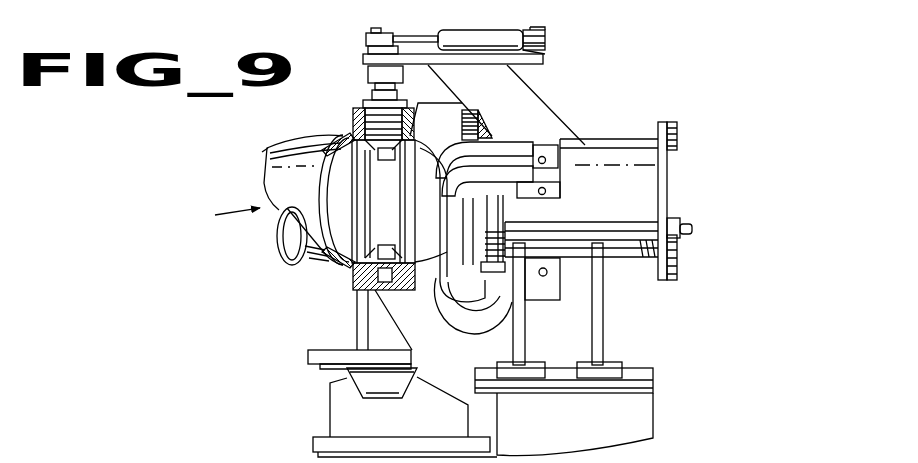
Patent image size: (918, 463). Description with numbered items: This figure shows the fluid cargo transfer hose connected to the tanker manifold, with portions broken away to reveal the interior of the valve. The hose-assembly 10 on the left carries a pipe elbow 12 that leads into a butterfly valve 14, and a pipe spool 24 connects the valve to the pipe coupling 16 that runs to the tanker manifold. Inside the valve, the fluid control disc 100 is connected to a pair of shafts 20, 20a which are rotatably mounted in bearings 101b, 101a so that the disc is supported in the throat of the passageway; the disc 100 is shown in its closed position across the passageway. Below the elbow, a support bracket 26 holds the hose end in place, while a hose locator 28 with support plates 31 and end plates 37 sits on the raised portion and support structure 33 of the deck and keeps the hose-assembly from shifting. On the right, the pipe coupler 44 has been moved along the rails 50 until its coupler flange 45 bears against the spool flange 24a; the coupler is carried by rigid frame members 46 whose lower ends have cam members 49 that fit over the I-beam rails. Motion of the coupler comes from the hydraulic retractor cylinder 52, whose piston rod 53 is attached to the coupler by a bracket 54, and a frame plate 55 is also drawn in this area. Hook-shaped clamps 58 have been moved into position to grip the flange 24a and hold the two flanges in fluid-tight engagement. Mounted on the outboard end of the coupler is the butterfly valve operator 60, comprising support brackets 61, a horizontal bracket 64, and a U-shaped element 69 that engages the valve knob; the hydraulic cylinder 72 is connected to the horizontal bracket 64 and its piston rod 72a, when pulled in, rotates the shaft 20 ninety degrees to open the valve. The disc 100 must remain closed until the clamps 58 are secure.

The hose-assembly 10 is at (261, 151).
The pipe elbow 12 is at (264, 167).
The butterfly valve 14 is at (357, 243).
The pipe coupling 16 is at (684, 161).
The valve control shaft 20 is at (373, 97).
The valve shaft 20a is at (380, 282).
The pipe spool 24 is at (424, 288).
The spool flange 24a is at (466, 302).
The support bracket 26 is at (328, 355).
The hose locator 28 is at (329, 398).
The support plates 31 is at (337, 419).
The raised portion and support structure 33 is at (608, 421).
The plates 37 is at (347, 373).
The pipe coupler 44 is at (632, 191).
The coupler flange 45 is at (490, 314).
The rigid frame members 46 is at (592, 325).
The cam members 49 is at (583, 365).
The rails 50 is at (642, 368).
The hydraulic retractor cylinder 52 is at (671, 216).
The piston rod 53 is at (609, 226).
The bracket 54 is at (498, 221).
The frame plate 55 is at (454, 124).
The hook-shaped clamps 58 is at (507, 143).
The butterfly valve operator 60 is at (554, 52).
The support brackets 61 is at (533, 93).
The horizontal bracket 64 is at (543, 63).
The U-shaped element 69 is at (372, 75).
The hydraulic cylinder 72 is at (528, 32).
The piston rod 72a is at (385, 26).
The fluid control disc 100 is at (347, 150).
The bearing 101a is at (372, 303).
The bearing 101b is at (360, 118).